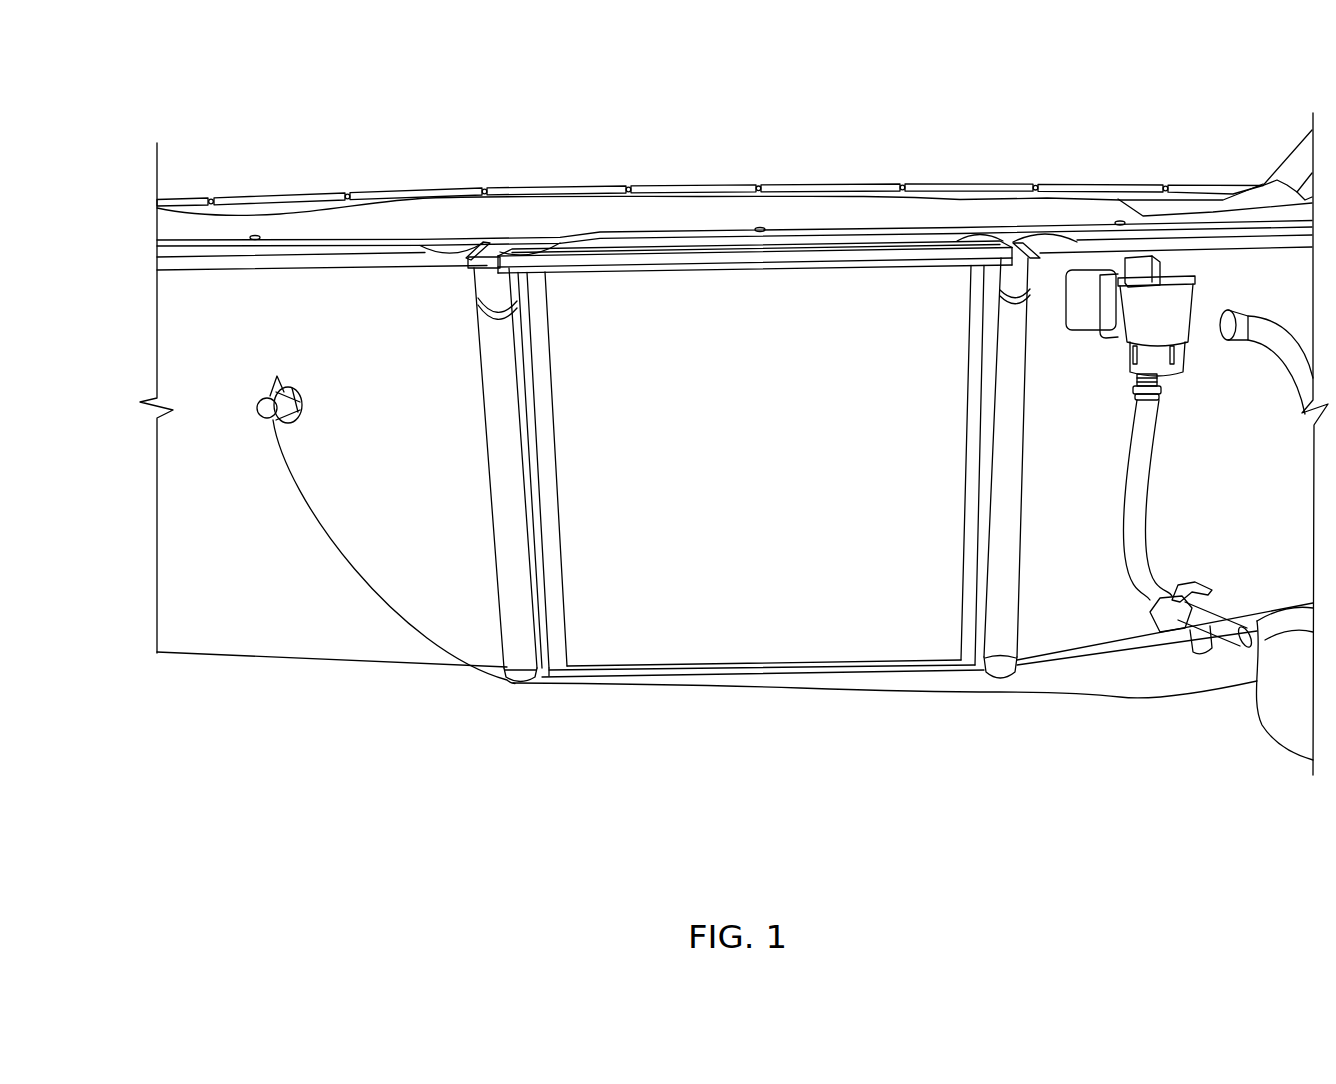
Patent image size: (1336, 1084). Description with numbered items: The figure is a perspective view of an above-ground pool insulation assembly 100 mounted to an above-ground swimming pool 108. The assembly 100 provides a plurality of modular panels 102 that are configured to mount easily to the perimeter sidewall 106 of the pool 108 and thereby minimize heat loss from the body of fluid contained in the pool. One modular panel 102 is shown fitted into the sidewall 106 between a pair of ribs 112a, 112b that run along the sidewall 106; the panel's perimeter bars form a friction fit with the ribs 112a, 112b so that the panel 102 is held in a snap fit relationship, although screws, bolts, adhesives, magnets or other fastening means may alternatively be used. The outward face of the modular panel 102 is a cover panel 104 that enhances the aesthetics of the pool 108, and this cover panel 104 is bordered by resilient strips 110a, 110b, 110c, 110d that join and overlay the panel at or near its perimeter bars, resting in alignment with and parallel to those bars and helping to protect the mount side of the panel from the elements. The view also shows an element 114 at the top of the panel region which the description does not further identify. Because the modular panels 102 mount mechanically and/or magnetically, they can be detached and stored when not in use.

The above-ground pool insulation assembly 100 is at (569, 800).
The modular panel 102 is at (762, 680).
The cover panel 104 is at (788, 488).
The perimeter sidewall 106 is at (430, 396).
The above-ground swimming pool 108 is at (402, 130).
The resilient strip 110a is at (535, 322).
The resilient strip 110b is at (980, 322).
The resilient strip 110c is at (780, 270).
The resilient strip 110d is at (672, 675).
The rib 112a is at (495, 546).
The rib 112b is at (1023, 590).
The header rail 114 is at (716, 225).